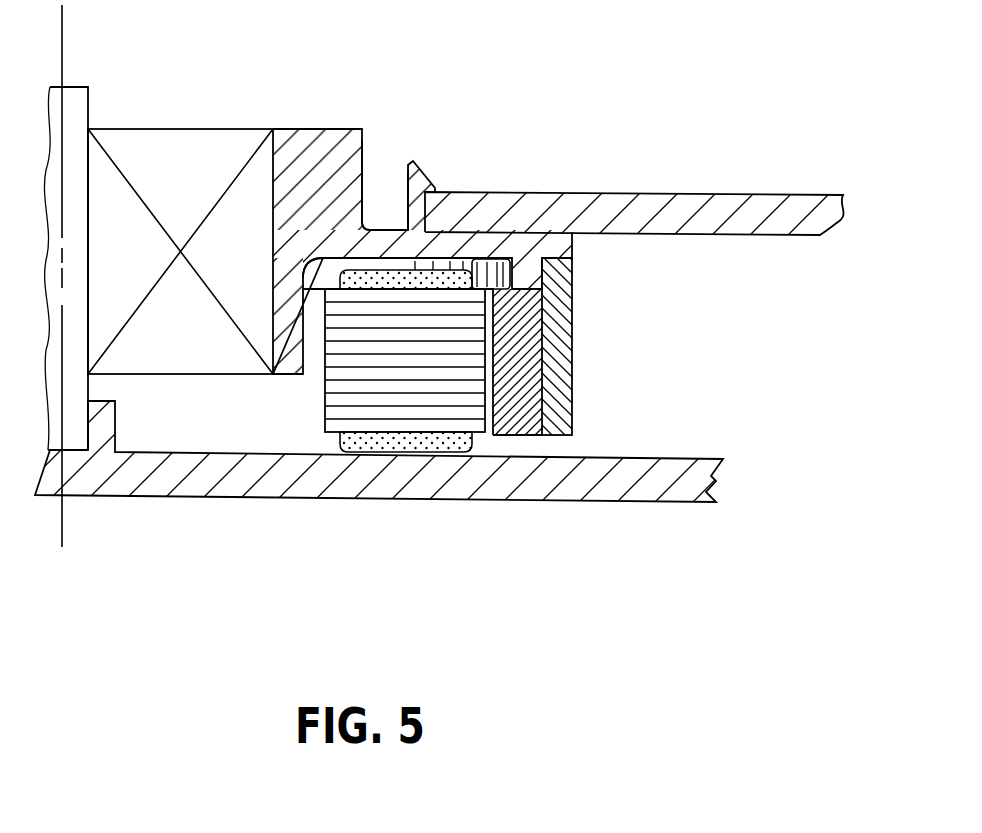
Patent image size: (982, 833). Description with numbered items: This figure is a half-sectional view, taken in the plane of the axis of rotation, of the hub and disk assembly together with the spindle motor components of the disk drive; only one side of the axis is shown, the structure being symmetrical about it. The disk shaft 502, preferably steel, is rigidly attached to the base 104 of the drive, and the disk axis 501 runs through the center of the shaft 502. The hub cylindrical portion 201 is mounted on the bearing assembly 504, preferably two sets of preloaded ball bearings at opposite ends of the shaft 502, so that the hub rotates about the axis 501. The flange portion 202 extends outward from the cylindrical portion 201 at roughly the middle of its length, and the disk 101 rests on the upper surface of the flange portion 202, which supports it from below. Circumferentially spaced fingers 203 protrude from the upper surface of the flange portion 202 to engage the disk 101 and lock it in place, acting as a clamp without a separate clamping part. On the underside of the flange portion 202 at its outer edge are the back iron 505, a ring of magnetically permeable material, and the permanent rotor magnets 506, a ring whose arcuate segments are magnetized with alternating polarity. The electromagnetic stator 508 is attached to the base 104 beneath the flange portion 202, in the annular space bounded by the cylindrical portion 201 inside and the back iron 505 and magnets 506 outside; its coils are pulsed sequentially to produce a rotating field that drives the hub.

The disk 101 is at (720, 193).
The base 104 is at (672, 458).
The hub cylindrical portion 201 is at (370, 147).
The flange portion 202 is at (573, 248).
The fingers 203 is at (412, 163).
The disk axis 501 is at (66, 21).
The disk shaft 502 is at (89, 100).
The bearing assembly 504 is at (237, 128).
The back iron 505 is at (573, 348).
The permanent rotor magnets 506 is at (524, 437).
The electromagnetic stator 508 is at (450, 413).